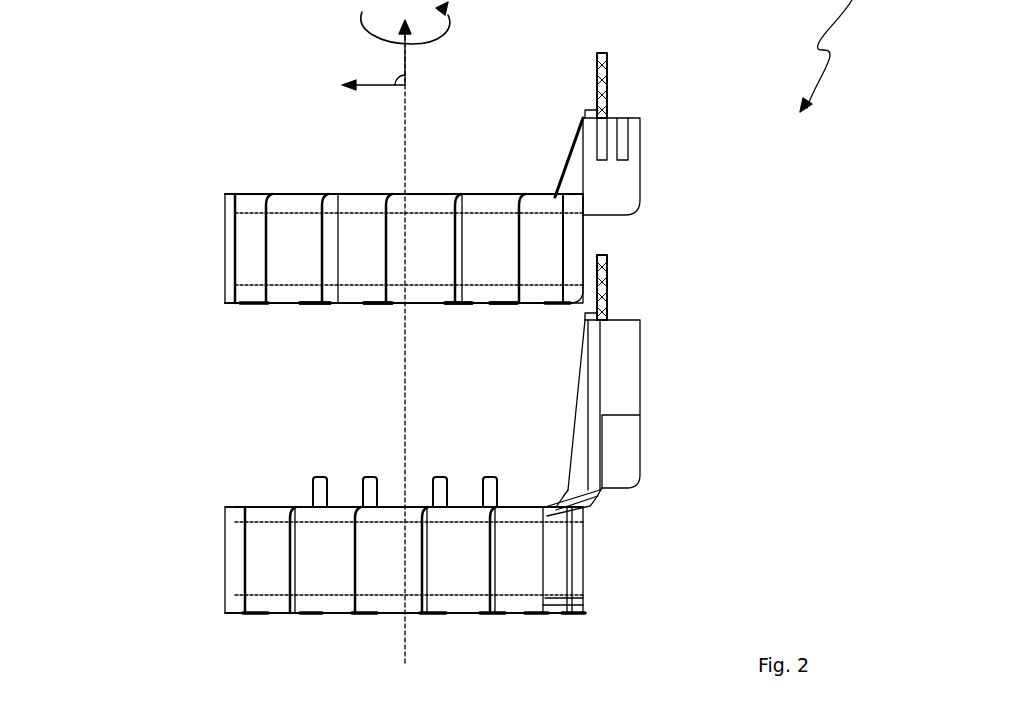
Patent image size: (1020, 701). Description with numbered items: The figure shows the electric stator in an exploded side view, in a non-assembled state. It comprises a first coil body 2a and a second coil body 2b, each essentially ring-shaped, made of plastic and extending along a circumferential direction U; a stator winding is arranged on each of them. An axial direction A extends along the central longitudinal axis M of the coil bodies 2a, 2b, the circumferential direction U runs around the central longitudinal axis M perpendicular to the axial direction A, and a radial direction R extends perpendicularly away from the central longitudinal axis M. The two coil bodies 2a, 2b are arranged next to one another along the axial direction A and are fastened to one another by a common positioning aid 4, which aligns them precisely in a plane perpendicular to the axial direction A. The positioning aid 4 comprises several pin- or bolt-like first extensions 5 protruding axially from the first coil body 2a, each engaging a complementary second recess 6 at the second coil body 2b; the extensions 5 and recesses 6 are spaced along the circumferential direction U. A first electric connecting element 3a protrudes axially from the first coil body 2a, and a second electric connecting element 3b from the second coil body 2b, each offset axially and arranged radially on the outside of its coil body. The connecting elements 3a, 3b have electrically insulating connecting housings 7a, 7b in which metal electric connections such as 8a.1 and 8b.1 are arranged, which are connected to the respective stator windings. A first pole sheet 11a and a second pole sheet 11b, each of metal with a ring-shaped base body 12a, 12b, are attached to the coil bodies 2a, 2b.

The first coil body 2a is at (166, 556).
The second coil body 2b is at (166, 240).
The first electric connecting element 3a is at (656, 385).
The second electric connecting element 3b is at (661, 134).
The positioning aid 4 is at (262, 322).
The first extensions 5 is at (320, 475).
The second recesses 6 is at (322, 310).
The first electrically insulating connecting housing 7a is at (627, 395).
The second electrically insulating connecting housing 7b is at (627, 190).
The electric connection 8a.1 is at (645, 287).
The electric connection 8b.1 is at (645, 85).
The first pole sheet 11a is at (303, 193).
The base body of the first pole sheet 12a is at (364, 317).
The second pole sheet 11b is at (250, 306).
The base body of the second pole sheet 12b is at (364, 484).
The axial direction A is at (408, 60).
The radial direction R is at (380, 80).
The circumferential direction U is at (450, 18).
The central longitudinal axis M is at (410, 108).